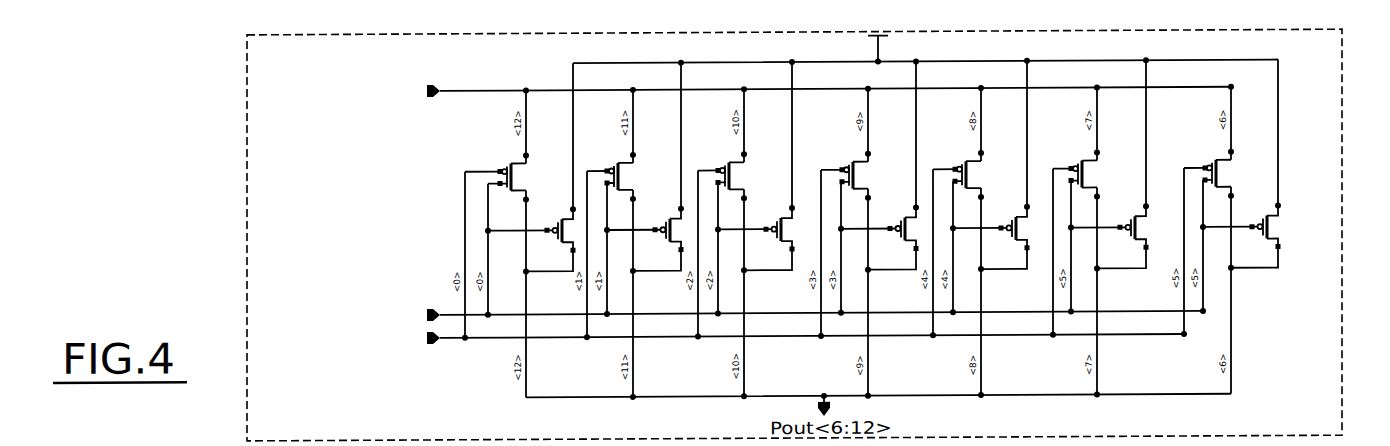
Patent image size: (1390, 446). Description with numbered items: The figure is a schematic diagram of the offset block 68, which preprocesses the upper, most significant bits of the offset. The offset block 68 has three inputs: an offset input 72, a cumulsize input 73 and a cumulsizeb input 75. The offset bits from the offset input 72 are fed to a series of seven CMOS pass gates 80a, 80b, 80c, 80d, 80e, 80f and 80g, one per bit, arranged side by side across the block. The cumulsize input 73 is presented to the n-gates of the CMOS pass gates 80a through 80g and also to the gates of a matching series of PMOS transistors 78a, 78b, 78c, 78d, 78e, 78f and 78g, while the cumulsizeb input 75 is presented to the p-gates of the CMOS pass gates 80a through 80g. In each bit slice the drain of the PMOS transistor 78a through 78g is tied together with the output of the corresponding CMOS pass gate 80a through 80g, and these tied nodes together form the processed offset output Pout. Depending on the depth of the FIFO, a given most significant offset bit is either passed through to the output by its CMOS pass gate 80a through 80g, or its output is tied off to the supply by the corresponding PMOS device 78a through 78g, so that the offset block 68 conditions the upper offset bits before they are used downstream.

The offset block 68 is at (1342, 175).
The offset input 72 is at (487, 89).
The cumulsize input 73 is at (452, 311).
The cumulsizeb input 75 is at (452, 347).
The CMOS pass gate 80a is at (513, 160).
The CMOS pass gate 80b is at (620, 160).
The CMOS pass gate 80c is at (731, 160).
The CMOS pass gate 80d is at (855, 160).
The CMOS pass gate 80e is at (968, 160).
The CMOS pass gate 80f is at (1084, 160).
The CMOS pass gate 80g is at (1218, 160).
The PMOS transistor 78a is at (573, 206).
The PMOS transistor 78b is at (681, 206).
The PMOS transistor 78c is at (792, 206).
The PMOS transistor 78d is at (916, 206).
The PMOS transistor 78e is at (1027, 206).
The PMOS transistor 78f is at (1146, 206).
The PMOS transistor 78g is at (1278, 206).